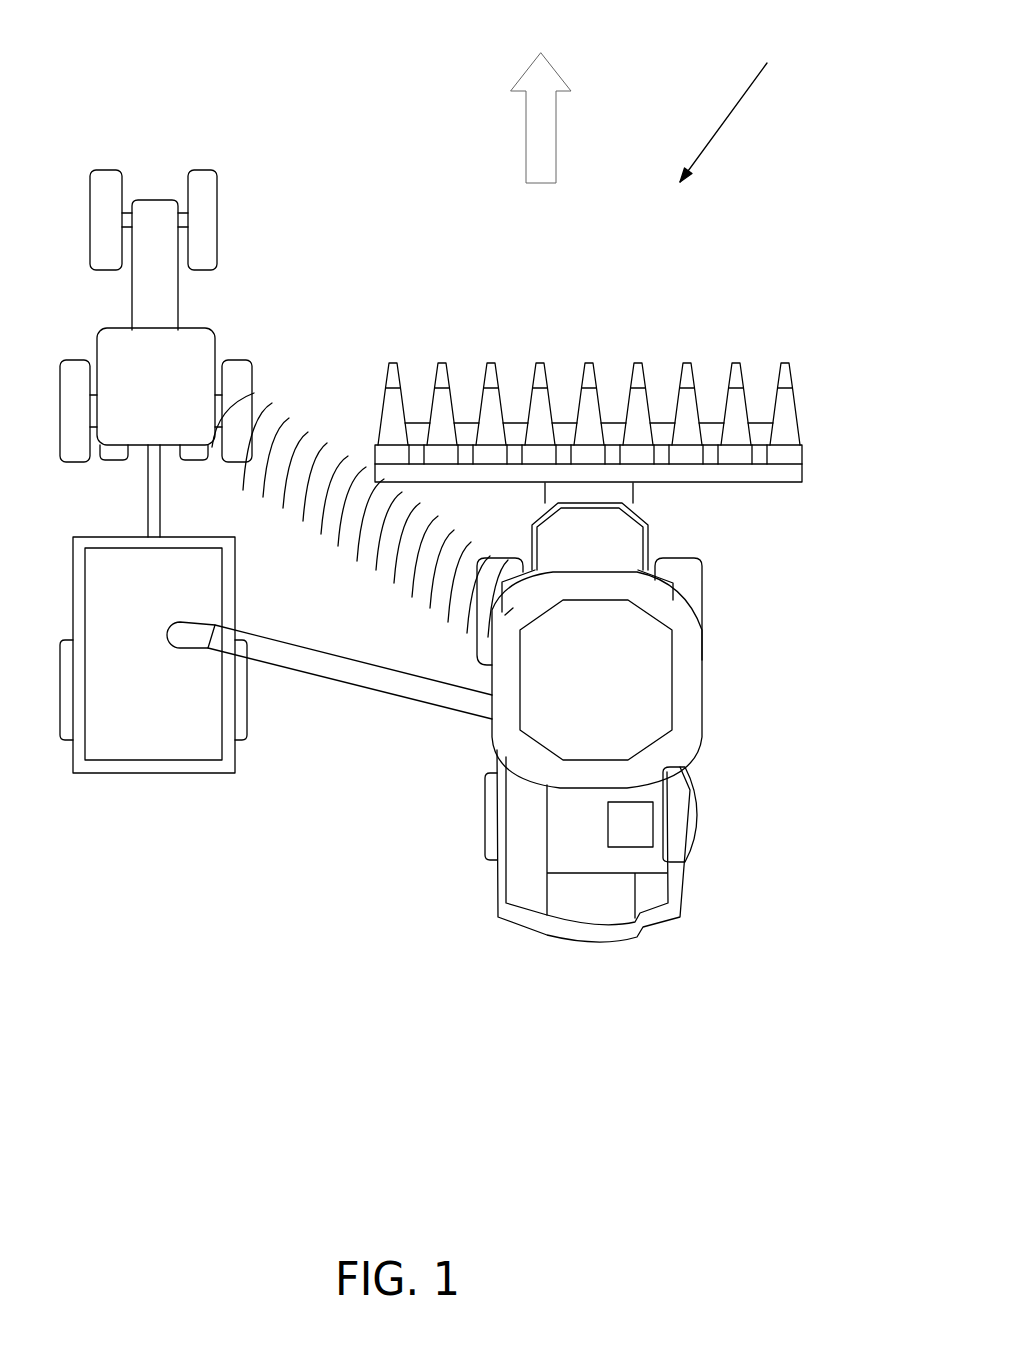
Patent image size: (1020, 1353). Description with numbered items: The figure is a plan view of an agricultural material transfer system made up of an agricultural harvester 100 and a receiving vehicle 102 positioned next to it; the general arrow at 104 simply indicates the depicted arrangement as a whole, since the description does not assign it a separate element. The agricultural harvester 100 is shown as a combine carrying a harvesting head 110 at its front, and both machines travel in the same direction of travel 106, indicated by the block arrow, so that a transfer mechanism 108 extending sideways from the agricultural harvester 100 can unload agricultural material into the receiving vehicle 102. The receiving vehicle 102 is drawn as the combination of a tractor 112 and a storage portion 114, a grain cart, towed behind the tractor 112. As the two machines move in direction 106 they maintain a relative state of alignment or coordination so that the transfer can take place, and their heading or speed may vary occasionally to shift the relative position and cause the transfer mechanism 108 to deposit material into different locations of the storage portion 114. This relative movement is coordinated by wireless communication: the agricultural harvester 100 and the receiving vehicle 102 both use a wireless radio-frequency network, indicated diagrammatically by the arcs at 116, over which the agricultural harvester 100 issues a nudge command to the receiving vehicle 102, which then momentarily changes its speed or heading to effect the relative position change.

The agricultural harvester 100 is at (703, 682).
The receiving vehicle 102 is at (205, 327).
The agricultural field 104 is at (741, 92).
The direction of travel 106 is at (526, 137).
The transfer mechanism 108 is at (358, 688).
The harvesting head 110 is at (797, 422).
The tractor 112 is at (153, 200).
The storage portion 114 is at (175, 760).
The RF network 116 is at (337, 457).